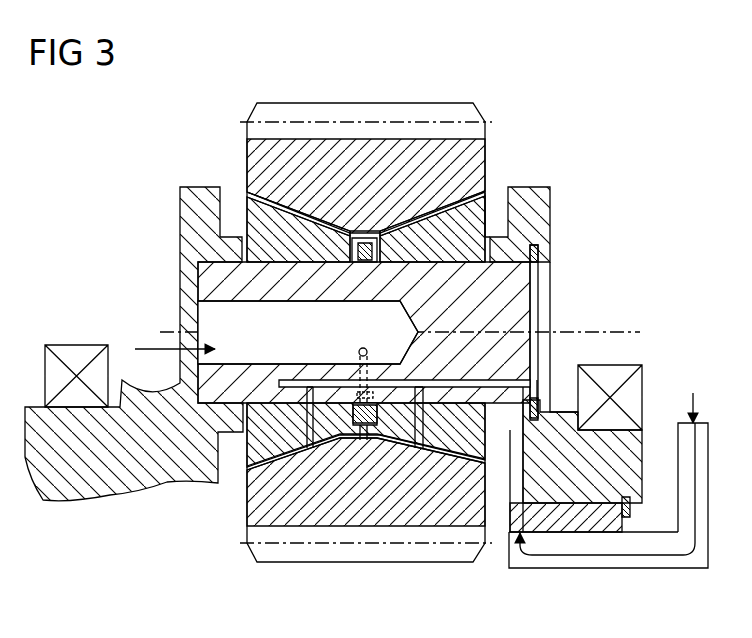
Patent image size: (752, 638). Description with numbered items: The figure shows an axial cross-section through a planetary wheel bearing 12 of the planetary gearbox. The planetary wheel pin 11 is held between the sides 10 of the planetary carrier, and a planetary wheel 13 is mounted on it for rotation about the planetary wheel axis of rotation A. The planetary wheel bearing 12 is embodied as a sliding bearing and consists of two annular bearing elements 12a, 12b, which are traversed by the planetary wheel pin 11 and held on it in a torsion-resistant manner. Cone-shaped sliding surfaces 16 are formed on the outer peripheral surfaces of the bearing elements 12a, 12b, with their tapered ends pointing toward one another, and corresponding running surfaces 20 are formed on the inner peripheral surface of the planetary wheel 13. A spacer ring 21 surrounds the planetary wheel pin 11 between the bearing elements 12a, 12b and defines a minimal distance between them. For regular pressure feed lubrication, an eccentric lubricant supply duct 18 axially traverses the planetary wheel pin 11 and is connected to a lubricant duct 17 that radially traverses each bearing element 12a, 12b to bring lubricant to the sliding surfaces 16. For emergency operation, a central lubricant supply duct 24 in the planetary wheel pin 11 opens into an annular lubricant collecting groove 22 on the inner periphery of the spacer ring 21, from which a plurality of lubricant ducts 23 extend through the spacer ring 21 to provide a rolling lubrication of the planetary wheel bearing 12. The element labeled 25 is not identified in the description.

The sides 10 is at (185, 217).
The planetary wheel pin 11 is at (500, 292).
The planetary wheel bearing 12 is at (492, 196).
The bearing element 12a is at (260, 248).
The bearing element 12b is at (502, 247).
The planetary wheel 13 is at (455, 157).
The sliding surfaces 16 is at (327, 227).
The lubricant duct 17 is at (292, 428).
The eccentric lubricant supply duct 18 is at (465, 392).
The running surfaces 20 is at (285, 212).
The spacer ring 21 is at (338, 424).
The lubricant collecting groove 22 is at (364, 442).
The lubricant ducts 23 is at (367, 240).
The central lubricant supply duct 24 is at (213, 318).
The right plate 25 is at (413, 215).
The planetary wheel axis of rotation A is at (630, 331).